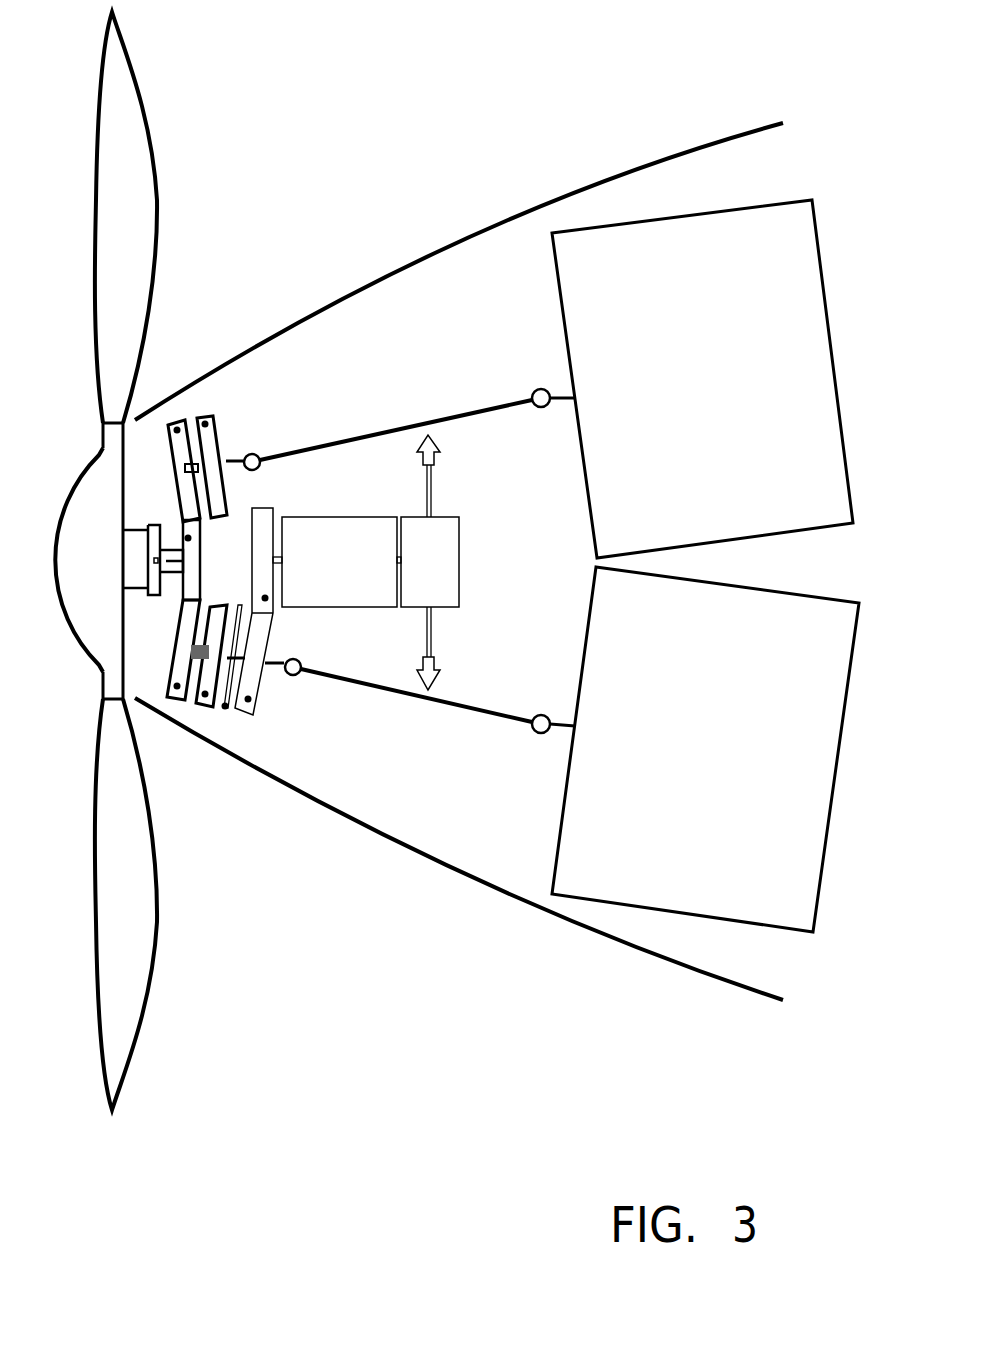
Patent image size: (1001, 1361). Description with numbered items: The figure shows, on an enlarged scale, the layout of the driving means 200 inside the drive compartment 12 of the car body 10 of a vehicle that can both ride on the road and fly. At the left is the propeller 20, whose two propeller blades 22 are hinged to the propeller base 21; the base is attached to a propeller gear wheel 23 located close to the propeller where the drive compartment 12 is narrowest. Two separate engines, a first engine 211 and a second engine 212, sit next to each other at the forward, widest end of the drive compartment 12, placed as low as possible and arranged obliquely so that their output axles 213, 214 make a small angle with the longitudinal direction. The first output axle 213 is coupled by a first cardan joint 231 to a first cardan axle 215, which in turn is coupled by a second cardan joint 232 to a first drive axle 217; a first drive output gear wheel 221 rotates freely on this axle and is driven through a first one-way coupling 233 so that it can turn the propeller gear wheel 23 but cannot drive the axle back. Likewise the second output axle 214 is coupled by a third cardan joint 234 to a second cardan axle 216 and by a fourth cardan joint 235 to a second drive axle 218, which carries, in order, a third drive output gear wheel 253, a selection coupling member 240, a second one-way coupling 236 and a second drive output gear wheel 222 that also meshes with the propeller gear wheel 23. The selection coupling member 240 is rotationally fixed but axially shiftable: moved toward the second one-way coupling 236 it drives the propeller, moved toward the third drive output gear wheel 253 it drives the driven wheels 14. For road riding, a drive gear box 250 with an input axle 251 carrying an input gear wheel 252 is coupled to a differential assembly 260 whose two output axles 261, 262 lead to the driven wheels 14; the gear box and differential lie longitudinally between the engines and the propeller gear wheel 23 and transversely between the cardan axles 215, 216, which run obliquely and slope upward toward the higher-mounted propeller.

The car body 10 is at (459, 534).
The drive compartment 12 is at (455, 252).
The driven wheels 14 is at (445, 563).
The propeller 20 is at (158, 561).
The propeller base 21 is at (62, 505).
The propeller blades 22 is at (140, 72).
The propeller gear wheel 23 is at (188, 538).
The driving means 200 is at (500, 137).
The first engine 211 is at (702, 379).
The second engine 212 is at (705, 749).
The first output axle 213 is at (560, 393).
The second output axle 214 is at (558, 732).
The first cardan axle 215 is at (403, 426).
The second cardan axle 216 is at (423, 700).
The first drive axle 217 is at (247, 457).
The second drive axle 218 is at (268, 665).
The first drive output gear wheel 221 is at (177, 430).
The second drive output gear wheel 222 is at (177, 686).
The first cardan joint 231 is at (533, 393).
The second cardan joint 232 is at (258, 456).
The first one-way coupling 233 is at (205, 424).
The third cardan joint 234 is at (533, 727).
The fourth cardan joint 235 is at (302, 673).
The second one-way coupling 236 is at (205, 694).
The selection coupling member 240 is at (225, 706).
The drive gear box 250 is at (341, 562).
The input axle 251 is at (278, 556).
The input gear wheel 252 is at (265, 598).
The third drive output gear wheel 253 is at (283, 649).
The differential assembly 260 is at (430, 562).
The first output axle of differential assembly 261 is at (436, 503).
The second output axle of differential assembly 262 is at (436, 621).